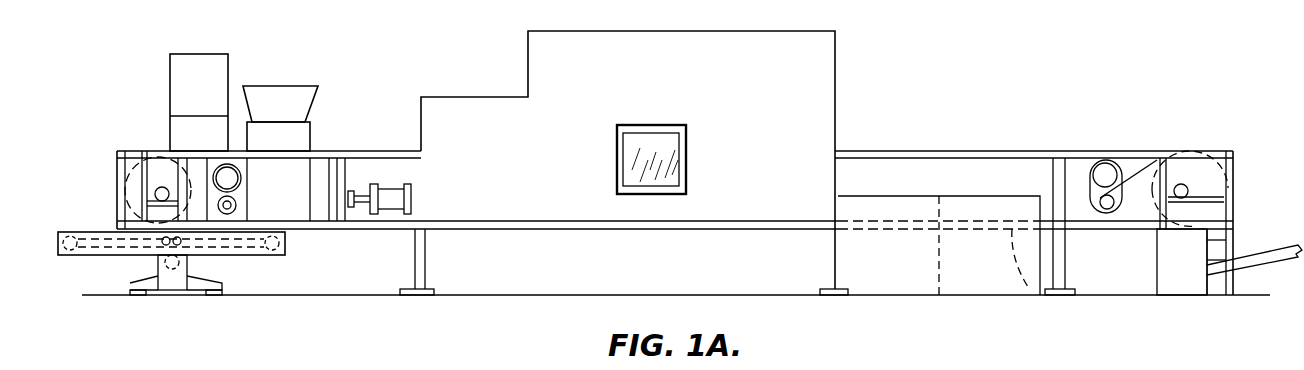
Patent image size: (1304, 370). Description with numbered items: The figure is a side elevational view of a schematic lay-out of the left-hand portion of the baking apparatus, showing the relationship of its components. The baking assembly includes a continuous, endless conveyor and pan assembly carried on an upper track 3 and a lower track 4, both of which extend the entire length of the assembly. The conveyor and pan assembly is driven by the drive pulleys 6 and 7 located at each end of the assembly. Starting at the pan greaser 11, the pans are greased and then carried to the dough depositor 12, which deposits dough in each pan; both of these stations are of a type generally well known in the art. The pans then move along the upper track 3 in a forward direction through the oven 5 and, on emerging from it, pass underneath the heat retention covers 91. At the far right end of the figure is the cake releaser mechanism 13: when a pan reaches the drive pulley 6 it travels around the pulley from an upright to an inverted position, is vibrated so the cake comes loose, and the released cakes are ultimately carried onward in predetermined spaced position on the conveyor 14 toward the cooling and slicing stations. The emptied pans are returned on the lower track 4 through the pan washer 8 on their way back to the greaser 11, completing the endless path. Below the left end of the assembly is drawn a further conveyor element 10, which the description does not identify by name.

The upper track 3 is at (365, 152).
The lower track 4 is at (325, 233).
The oven 5 is at (820, 52).
The drive pulley 6 is at (1205, 178).
The drive pulley 7 is at (162, 165).
The pan washer 8 is at (968, 282).
The feed conveyor 10 is at (220, 269).
The pan greaser 11 is at (201, 62).
The dough depositor 12 is at (285, 96).
The cake releaser mechanism 13 is at (972, 120).
The conveyor 14 is at (1248, 262).
The heat retention covers 91 is at (1022, 152).